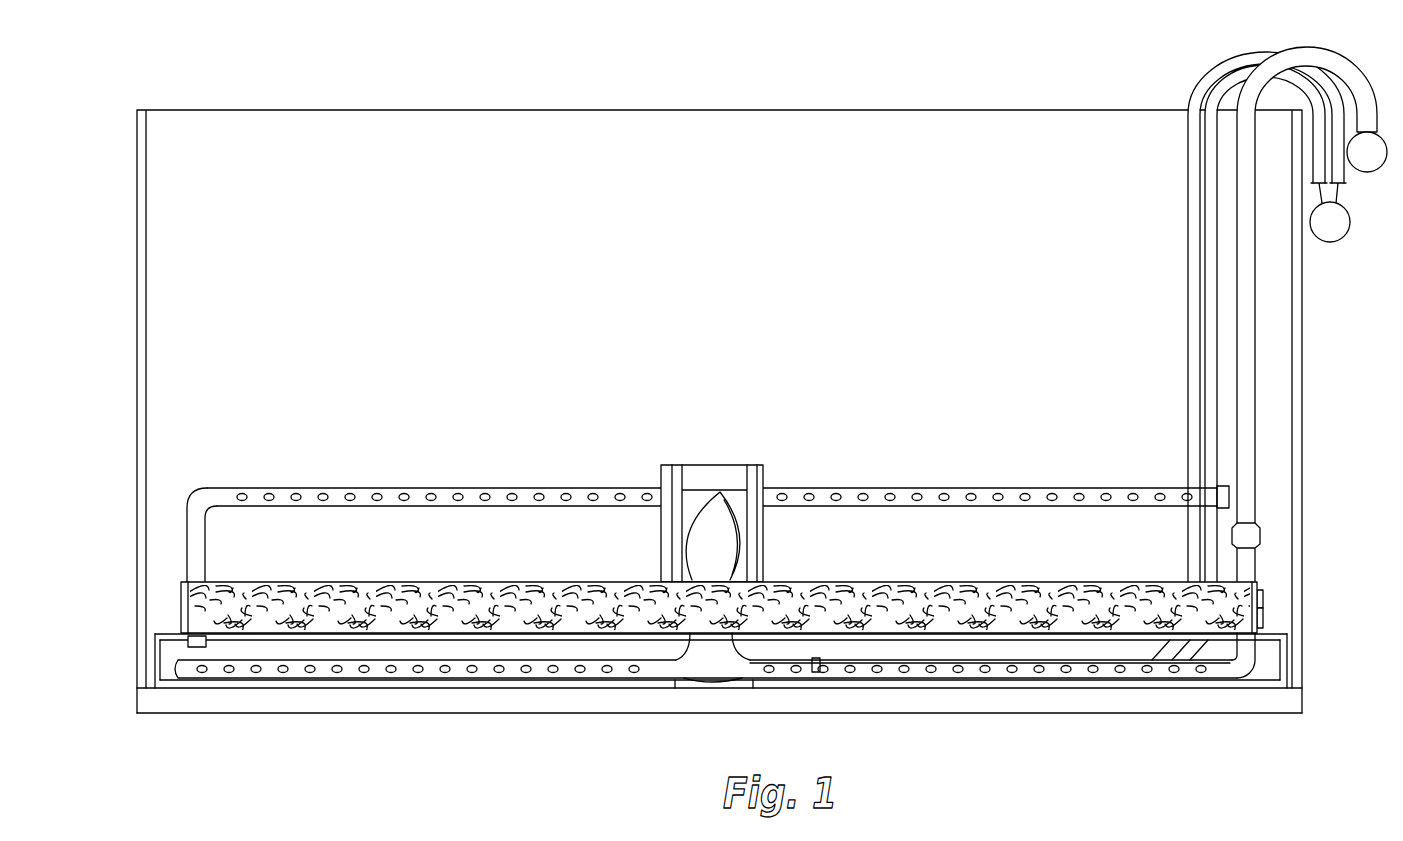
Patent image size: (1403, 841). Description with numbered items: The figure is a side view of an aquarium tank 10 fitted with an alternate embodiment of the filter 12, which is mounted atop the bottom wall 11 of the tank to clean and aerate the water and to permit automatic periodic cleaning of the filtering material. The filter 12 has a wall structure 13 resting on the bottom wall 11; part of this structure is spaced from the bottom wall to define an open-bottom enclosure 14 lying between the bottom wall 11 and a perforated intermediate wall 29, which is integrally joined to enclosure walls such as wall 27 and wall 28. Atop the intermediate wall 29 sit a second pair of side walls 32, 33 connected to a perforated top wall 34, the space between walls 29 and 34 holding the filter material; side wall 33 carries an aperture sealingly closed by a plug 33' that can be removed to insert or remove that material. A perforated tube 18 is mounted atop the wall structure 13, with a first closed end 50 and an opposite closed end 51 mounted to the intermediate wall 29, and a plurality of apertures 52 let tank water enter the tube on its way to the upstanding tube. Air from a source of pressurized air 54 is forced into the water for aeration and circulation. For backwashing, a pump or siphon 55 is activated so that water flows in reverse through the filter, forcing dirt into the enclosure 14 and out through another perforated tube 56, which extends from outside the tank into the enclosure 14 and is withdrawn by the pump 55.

The aquarium tank 10 is at (437, 110).
The bottom wall 11 is at (205, 697).
The filter 12 is at (537, 352).
The wall structure 13 is at (186, 572).
The enclosure 14 is at (485, 646).
The perforated tube 18 is at (1065, 488).
The wall 27 is at (1287, 670).
The wall 28 is at (155, 660).
The intermediate wall 29 is at (322, 638).
The side wall 32 is at (181, 612).
The side wall 33 is at (1312, 606).
The plug 33' is at (1309, 559).
The top wall 34 is at (462, 582).
The first closed end 50 is at (1223, 488).
The opposite end 51 is at (192, 648).
The apertures 52 is at (592, 487).
The source of pressurized air 54 is at (1334, 242).
The pump or siphon 55 is at (1367, 172).
The perforated tube 56 is at (545, 678).